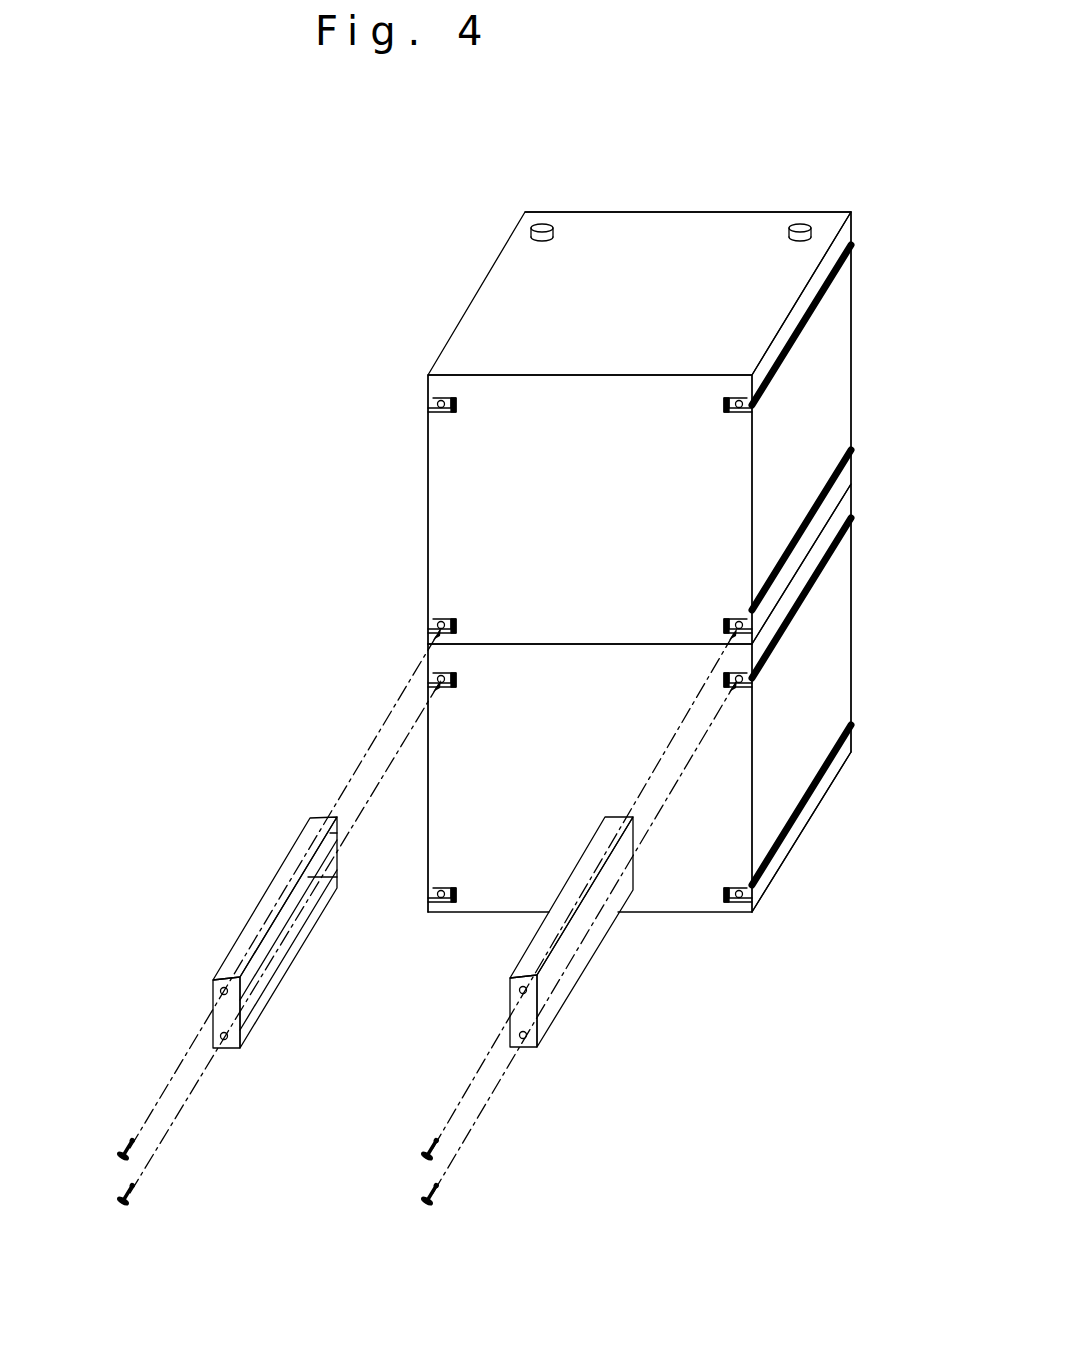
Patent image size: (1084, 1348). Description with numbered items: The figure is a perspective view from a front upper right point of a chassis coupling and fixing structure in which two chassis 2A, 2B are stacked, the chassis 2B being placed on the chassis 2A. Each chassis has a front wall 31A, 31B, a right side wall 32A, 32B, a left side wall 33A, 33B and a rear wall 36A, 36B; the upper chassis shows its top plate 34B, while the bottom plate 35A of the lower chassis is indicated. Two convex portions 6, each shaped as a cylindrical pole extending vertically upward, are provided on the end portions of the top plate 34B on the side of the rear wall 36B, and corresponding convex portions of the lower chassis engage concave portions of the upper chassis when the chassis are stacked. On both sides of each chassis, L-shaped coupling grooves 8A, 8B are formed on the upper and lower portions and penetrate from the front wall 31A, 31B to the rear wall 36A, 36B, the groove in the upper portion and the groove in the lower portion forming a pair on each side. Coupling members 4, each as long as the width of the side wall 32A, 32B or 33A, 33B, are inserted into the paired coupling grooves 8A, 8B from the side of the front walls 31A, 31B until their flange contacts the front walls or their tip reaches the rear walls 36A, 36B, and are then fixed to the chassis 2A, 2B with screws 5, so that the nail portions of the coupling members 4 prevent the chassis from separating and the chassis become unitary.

The chassis 2A is at (658, 590).
The chassis 2B is at (640, 390).
The coupling member 4 is at (290, 966).
The screws 5 is at (101, 1152).
The convex portion 6 is at (547, 227).
The coupling groove 8A is at (432, 683).
The coupling groove 8B is at (432, 627).
The front wall 31A is at (663, 897).
The front wall 31B is at (450, 440).
The right side wall 32A is at (800, 789).
The right side wall 32B is at (836, 309).
The left side wall 33A is at (428, 865).
The left side wall 33B is at (428, 517).
The top plate 34B is at (706, 232).
The bottom plate 35A is at (716, 912).
The rear wall 36A is at (851, 581).
The rear wall 36B is at (661, 210).